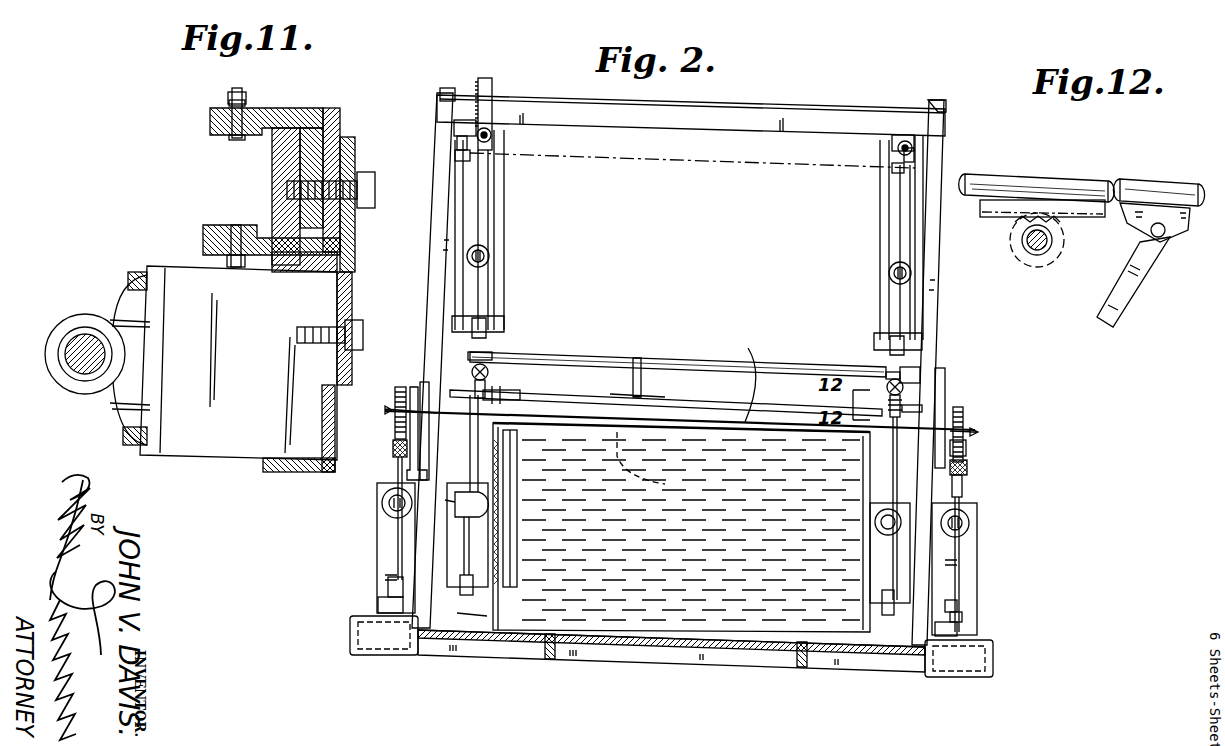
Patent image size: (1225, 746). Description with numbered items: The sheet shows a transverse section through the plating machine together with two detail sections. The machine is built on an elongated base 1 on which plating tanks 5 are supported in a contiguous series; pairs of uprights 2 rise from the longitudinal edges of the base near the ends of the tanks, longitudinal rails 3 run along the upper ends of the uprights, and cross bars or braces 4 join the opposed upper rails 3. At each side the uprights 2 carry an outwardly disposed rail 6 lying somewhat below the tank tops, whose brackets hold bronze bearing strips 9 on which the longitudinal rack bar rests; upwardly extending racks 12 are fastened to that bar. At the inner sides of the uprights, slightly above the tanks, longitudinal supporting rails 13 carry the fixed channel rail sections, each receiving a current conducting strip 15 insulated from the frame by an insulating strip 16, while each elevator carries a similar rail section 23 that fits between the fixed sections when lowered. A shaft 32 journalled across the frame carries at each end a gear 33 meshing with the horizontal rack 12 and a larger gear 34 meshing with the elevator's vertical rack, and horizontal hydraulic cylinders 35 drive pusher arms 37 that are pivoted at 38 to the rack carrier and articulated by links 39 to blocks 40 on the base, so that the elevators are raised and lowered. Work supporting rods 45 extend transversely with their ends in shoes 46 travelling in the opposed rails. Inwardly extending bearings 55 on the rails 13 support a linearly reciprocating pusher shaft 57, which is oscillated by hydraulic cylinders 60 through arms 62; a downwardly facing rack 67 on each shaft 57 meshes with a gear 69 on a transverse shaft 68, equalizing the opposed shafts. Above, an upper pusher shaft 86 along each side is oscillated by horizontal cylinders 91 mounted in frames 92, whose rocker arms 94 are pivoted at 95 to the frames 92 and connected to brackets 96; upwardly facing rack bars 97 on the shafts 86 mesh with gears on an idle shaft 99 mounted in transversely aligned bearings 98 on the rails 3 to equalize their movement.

In FIG. 2, the elongated base 1 is at (748, 655).
In FIG. 2, the uprights 2 is at (436, 242).
In FIG. 2, the longitudinal rails 3 is at (457, 140).
In FIG. 2, the cross bars or braces 4 is at (787, 124).
In FIG. 2, the plating tanks 5 is at (658, 612).
In FIG. 2, the outwardly disposed rail 6 is at (408, 472).
In FIG. 2, the bearing strips 9 is at (393, 448).
In FIG. 2, the upwardly extending racks 12 is at (966, 452).
In FIG. 11, the longitudinal supporting rails 13 is at (300, 466).
In FIG. 11, the current conducting rail or strip 15 is at (287, 130).
In FIG. 11, the insulating strip 16 is at (332, 122).
In FIG. 11, the rail section 23 is at (346, 137).
In FIG. 2, the shaft 32 is at (666, 374).
In FIG. 2, the gear 33 is at (398, 401).
In FIG. 2, the larger gear 34 is at (418, 388).
In FIG. 2, the horizontal hydraulic cylinders 35 is at (386, 507).
In FIG. 2, the pusher arms 37 is at (396, 563).
In FIG. 2, the pivotal attachment 38 is at (962, 480).
In FIG. 2, the links 39 is at (968, 612).
In FIG. 2, the blocks 40 is at (968, 634).
In FIG. 2, the work supporting rods 45 is at (705, 174).
In FIG. 2, the shoes 46 is at (908, 378).
In FIG. 11, the inwardly extending bearings 55 is at (245, 440).
In FIG. 11, the pusher shaft 57 is at (88, 362).
In FIG. 2, the pusher shaft 57 is at (486, 368).
In FIG. 12, the pusher shaft 57 is at (992, 185).
In FIG. 2, the hydraulic cylinders 60 is at (462, 492).
In FIG. 12, the arms 62 is at (1118, 310).
In FIG. 12, the downwardly facing rack 67 is at (1000, 214).
In FIG. 2, the transverse shafts 68 is at (902, 404).
In FIG. 12, the transverse shafts 68 is at (1040, 252).
In FIG. 2, the gears 69 is at (486, 392).
In FIG. 12, the gears 69 is at (1060, 250).
In FIG. 2, the upper pusher shaft 86 is at (490, 130).
In FIG. 2, the horizontal cylinders 91 is at (490, 256).
In FIG. 2, the frames 92 is at (500, 222).
In FIG. 2, the rocker arms 94 is at (492, 296).
In FIG. 2, the pivotal connection 95 is at (495, 326).
In FIG. 2, the brackets 96 is at (497, 152).
In FIG. 2, the upwardly facing rack bars 97 is at (460, 126).
In FIG. 2, the transversely alined bearings 98 is at (448, 87).
In FIG. 2, the idle shaft 99 is at (694, 110).